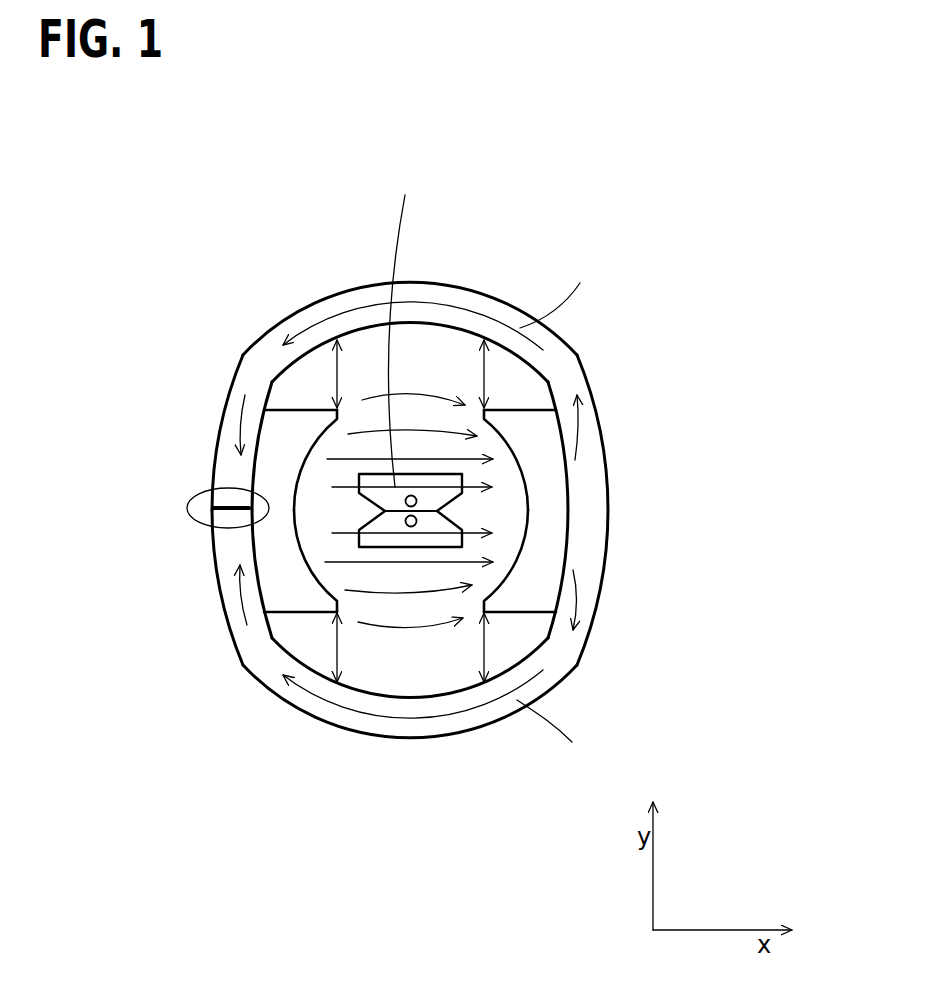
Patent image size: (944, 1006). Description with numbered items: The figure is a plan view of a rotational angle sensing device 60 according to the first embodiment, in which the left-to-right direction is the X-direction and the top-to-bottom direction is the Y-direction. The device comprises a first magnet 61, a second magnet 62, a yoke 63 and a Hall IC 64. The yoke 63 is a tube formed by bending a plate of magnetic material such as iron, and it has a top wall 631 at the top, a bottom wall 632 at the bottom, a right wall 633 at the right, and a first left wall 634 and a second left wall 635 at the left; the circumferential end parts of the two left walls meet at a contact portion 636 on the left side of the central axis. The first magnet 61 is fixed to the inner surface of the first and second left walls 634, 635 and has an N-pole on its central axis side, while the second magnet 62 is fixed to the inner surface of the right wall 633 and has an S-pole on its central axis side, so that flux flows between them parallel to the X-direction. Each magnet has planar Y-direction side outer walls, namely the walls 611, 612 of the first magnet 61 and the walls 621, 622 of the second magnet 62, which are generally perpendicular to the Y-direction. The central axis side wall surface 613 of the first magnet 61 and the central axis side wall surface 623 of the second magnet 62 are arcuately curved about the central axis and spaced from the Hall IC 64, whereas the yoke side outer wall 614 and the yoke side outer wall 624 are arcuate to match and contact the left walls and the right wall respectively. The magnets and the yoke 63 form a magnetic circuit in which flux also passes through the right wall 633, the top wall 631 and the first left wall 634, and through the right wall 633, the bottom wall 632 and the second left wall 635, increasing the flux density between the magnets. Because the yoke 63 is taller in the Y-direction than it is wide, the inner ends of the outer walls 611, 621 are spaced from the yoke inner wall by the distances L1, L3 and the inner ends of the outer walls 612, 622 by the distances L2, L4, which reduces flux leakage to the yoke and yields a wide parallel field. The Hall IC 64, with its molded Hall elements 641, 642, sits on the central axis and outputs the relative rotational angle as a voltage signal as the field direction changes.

The rotational angle sensing device 60 is at (560, 157).
The first magnet 61 is at (270, 580).
The Y-direction side outer wall of the first magnet 611 is at (288, 404).
The Y-direction side outer wall of the first magnet 612 is at (305, 614).
The central axis side wall surface of the first magnet 613 is at (316, 604).
The yoke side outer wall of the first magnet 614 is at (247, 462).
The second magnet 62 is at (553, 500).
The Y-direction side outer wall of the second magnet 621 is at (530, 407).
The Y-direction side outer wall of the second magnet 622 is at (546, 640).
The central axis side wall surface of the second magnet 623 is at (522, 542).
The yoke side outer wall of the second magnet 624 is at (573, 470).
The yoke 63 is at (300, 316).
The top wall 631 is at (435, 290).
The bottom wall 632 is at (423, 732).
The right wall 633 is at (595, 532).
The first left wall 634 is at (230, 414).
The second left wall 635 is at (222, 552).
The contact portion 636 is at (200, 520).
The Hall IC 64 is at (426, 539).
The Hall element 641 is at (405, 503).
The Hall element 642 is at (410, 525).
The distance L1 is at (340, 403).
The distance L2 is at (340, 618).
The distance L3 is at (482, 403).
The distance L4 is at (482, 618).